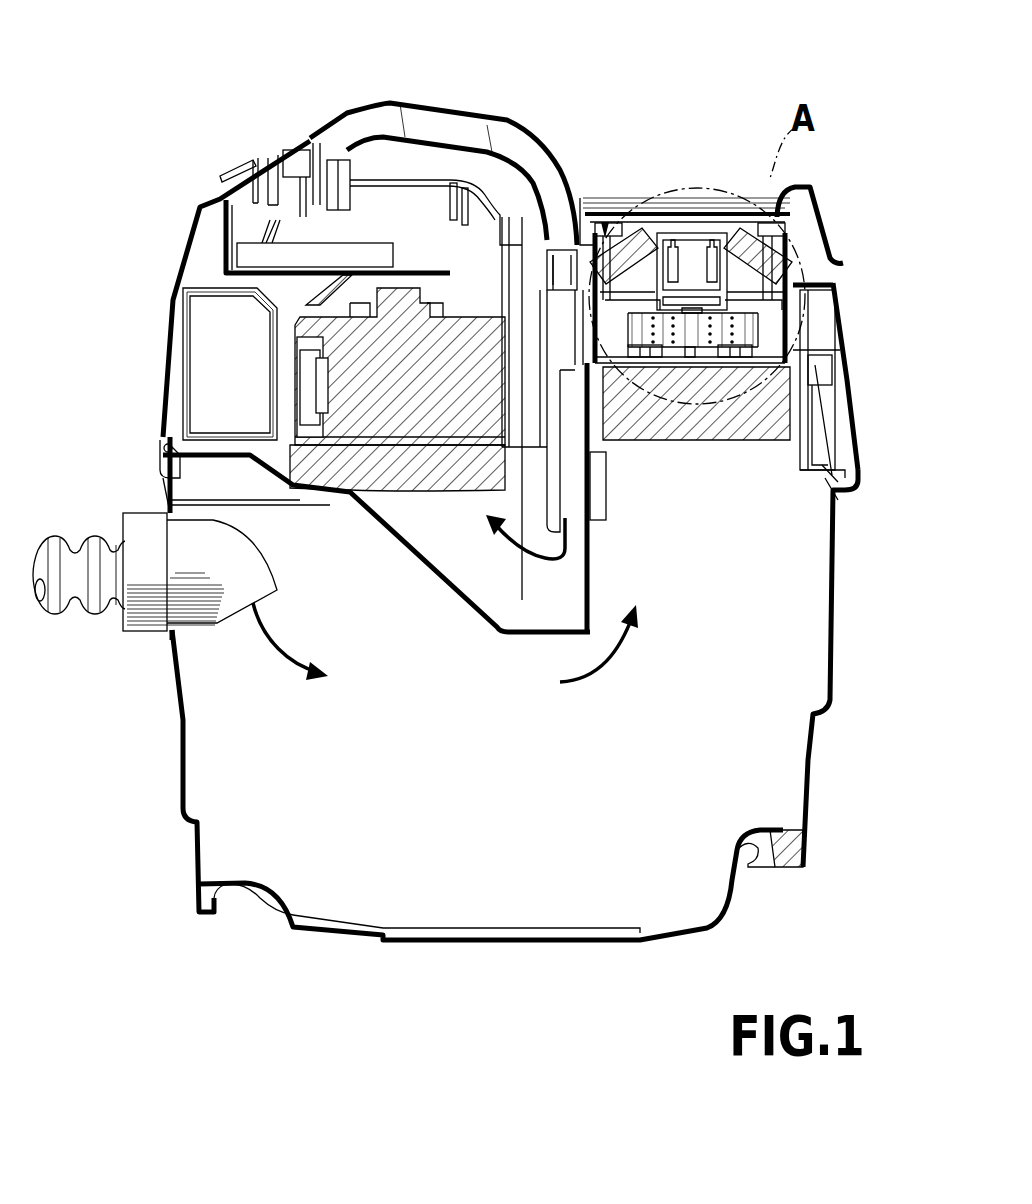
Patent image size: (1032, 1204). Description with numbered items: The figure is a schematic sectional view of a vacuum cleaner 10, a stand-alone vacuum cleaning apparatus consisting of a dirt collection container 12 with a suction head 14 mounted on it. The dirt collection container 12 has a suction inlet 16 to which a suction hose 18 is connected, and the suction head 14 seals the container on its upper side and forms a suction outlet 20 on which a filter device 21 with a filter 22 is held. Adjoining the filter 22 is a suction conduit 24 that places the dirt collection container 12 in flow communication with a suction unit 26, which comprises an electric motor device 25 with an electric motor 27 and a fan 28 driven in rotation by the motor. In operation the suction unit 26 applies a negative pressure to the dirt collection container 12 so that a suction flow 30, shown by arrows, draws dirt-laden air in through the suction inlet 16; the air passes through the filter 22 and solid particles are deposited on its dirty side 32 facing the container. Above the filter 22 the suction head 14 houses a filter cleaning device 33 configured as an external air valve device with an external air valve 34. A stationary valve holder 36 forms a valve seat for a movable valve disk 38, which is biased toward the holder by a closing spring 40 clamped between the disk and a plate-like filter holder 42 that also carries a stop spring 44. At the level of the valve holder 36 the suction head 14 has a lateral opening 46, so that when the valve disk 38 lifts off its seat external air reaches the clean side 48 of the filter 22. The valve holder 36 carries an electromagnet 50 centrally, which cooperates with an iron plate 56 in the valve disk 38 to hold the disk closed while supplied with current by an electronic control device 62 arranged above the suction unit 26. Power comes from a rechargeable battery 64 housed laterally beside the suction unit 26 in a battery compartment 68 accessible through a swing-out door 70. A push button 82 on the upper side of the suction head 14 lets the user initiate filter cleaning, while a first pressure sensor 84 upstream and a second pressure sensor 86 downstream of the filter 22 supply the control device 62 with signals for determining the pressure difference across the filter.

The vacuum cleaner 10 is at (846, 133).
The dirt collection container 12 is at (183, 738).
The suction head 14 is at (408, 100).
The suction inlet 16 is at (135, 607).
The suction hose 18 is at (85, 545).
The suction outlet 20 is at (792, 372).
The filter device 21 is at (728, 457).
The filter 22 is at (632, 440).
The suction conduit 24 is at (570, 398).
The electric motor device 25 is at (328, 385).
The suction unit 26 is at (316, 398).
The electric motor 27 is at (360, 372).
The fan 28 is at (353, 490).
The suction flow 30 is at (585, 678).
The dirty side 32 is at (832, 473).
The filter cleaning device 33 is at (790, 240).
The external air valve 34 is at (787, 260).
The valve holder 36 is at (605, 215).
The valve disk 38 is at (768, 313).
The closing spring 40 is at (722, 338).
The filter holder 42 is at (757, 370).
The stop spring 44 is at (689, 358).
The lateral opening 46 is at (843, 263).
The clean side 48 is at (800, 378).
The electromagnet 50 is at (710, 295).
The iron plate 56 is at (688, 300).
The control device 62 is at (343, 253).
The rechargeable battery 64 is at (200, 378).
The battery compartment 68 is at (195, 228).
The swing-out door 70 is at (213, 251).
The push button 82 is at (235, 165).
The first pressure sensor 84 is at (598, 508).
The second pressure sensor 86 is at (563, 290).